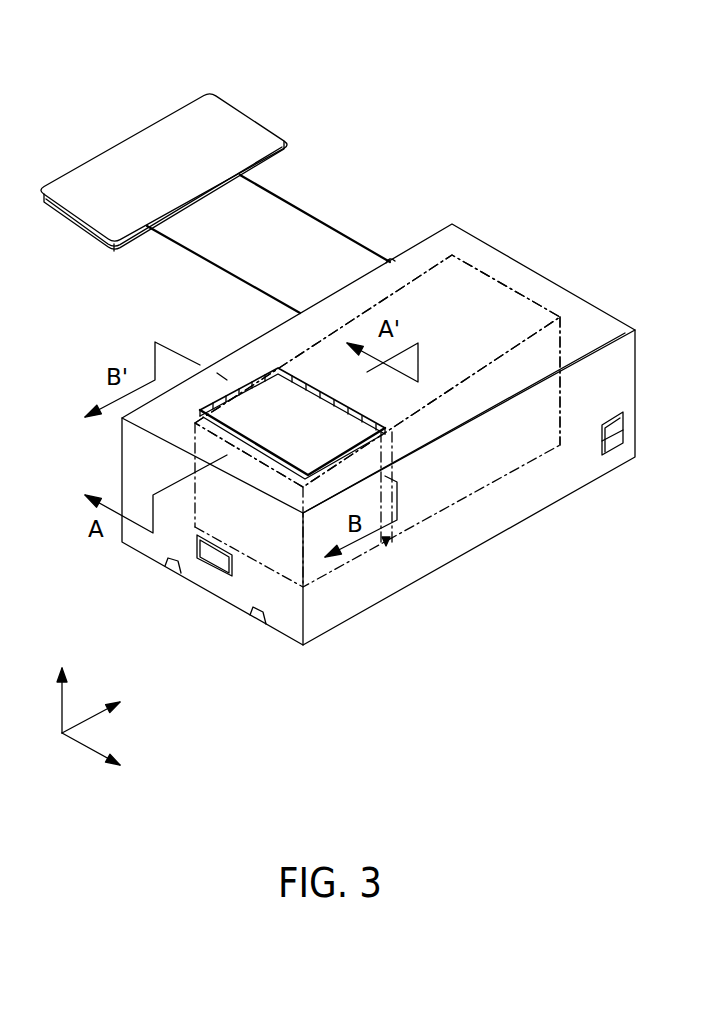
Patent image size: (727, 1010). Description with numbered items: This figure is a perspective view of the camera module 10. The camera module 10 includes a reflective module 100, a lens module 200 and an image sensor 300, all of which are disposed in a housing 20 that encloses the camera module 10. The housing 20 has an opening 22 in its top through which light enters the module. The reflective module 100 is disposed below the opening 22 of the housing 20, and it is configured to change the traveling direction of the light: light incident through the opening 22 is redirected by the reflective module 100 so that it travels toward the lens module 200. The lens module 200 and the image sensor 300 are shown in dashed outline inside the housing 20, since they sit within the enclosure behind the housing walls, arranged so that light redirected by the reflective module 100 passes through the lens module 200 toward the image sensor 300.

The camera module 10 is at (312, 38).
The housing 20 is at (350, 598).
The opening 22 is at (312, 416).
The reflective module 100 is at (378, 552).
The lens module 200 is at (460, 465).
The image sensor 300 is at (426, 408).